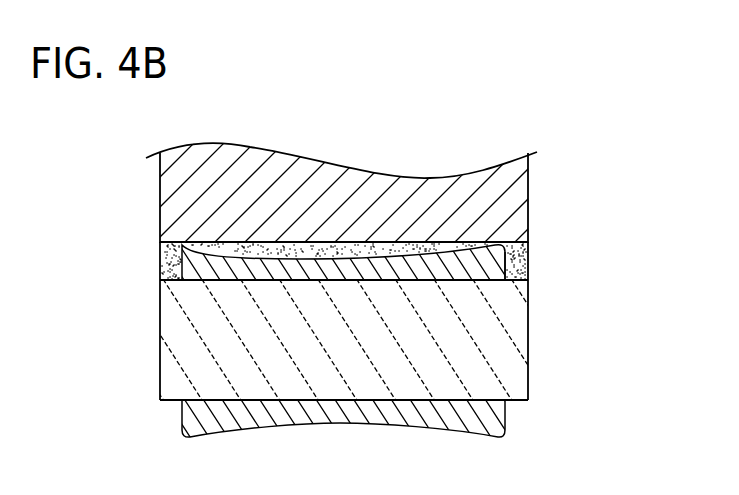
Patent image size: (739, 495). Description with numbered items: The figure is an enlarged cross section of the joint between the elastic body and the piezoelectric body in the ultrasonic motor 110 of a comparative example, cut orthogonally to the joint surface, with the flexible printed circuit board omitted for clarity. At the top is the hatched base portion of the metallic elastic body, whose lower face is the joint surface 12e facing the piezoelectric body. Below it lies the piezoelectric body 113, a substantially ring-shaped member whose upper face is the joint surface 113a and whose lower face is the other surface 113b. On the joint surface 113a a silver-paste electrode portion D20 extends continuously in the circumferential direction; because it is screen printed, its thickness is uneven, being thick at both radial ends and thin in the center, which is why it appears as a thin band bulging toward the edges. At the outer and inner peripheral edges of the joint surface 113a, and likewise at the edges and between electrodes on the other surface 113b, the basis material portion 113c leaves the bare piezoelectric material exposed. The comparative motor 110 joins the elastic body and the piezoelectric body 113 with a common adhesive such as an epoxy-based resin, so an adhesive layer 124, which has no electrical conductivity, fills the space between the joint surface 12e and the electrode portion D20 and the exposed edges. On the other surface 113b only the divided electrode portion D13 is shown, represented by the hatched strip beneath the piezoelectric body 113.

The ultrasonic motor 110 is at (349, 253).
The joint surface 12e is at (161, 253).
The adhesive layer 124 is at (518, 251).
The electrode portion D20 is at (503, 261).
The joint surface 113a is at (519, 278).
The piezoelectric body 113 is at (515, 330).
The other surface 113b is at (521, 401).
The basis material portion 113c is at (158, 274).
The electrode portion D13 is at (508, 427).